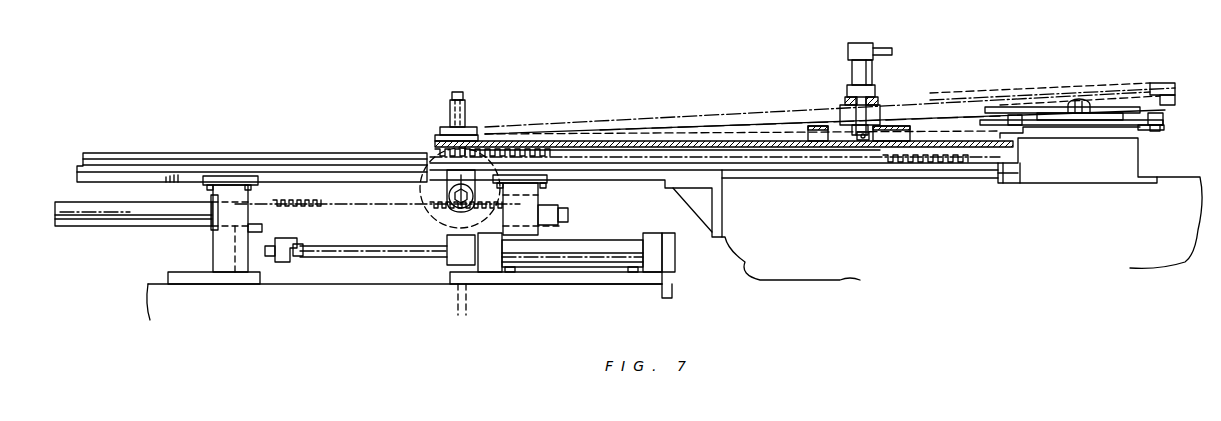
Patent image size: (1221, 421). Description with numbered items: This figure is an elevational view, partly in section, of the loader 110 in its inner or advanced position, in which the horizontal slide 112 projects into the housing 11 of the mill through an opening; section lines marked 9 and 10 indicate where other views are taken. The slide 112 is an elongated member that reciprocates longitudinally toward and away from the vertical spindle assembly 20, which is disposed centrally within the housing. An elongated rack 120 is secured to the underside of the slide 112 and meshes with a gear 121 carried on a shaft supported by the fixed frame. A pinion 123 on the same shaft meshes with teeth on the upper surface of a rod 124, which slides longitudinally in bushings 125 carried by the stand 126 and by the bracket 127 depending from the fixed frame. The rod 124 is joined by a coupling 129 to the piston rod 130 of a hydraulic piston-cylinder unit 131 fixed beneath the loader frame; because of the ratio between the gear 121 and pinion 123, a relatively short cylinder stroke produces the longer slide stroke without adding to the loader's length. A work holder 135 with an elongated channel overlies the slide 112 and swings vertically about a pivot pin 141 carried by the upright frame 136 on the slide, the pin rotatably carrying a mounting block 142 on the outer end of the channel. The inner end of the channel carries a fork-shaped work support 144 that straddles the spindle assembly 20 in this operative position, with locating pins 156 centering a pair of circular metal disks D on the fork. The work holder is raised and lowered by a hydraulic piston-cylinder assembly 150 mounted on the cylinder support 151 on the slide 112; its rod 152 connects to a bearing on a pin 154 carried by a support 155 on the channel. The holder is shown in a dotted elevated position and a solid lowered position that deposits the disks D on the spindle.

The section line 9 is at (104, 131).
The section line 10 is at (507, 143).
The housing 11 is at (862, 18).
The spindle assembly 20 is at (1083, 131).
The loader 110 is at (298, 145).
The slide 112 is at (803, 150).
The rack 120 is at (630, 155).
The gear 121 is at (425, 188).
The pinion 123 is at (440, 206).
The rod 124 is at (150, 212).
The bushings 125 is at (235, 272).
The stand 126 is at (225, 262).
The bracket 127 is at (538, 198).
The coupling 129 is at (290, 259).
The piston rod 130 is at (414, 252).
The hydraulic piston-cylinder unit 131 is at (598, 252).
The work holder 135 is at (710, 125).
The upright frame 136 is at (442, 119).
The pivot pin 141 is at (466, 110).
The mounting block 142 is at (449, 108).
The fork-shaped work support 144 is at (1118, 128).
The hydraulic piston-cylinder assembly 150 is at (875, 76).
The cylinder support 151 is at (843, 110).
The rod 152 is at (870, 106).
The pin 154 is at (864, 141).
The support 155 is at (885, 135).
The locating pins 156 is at (1163, 120).
The circular metal disks D is at (1125, 95).